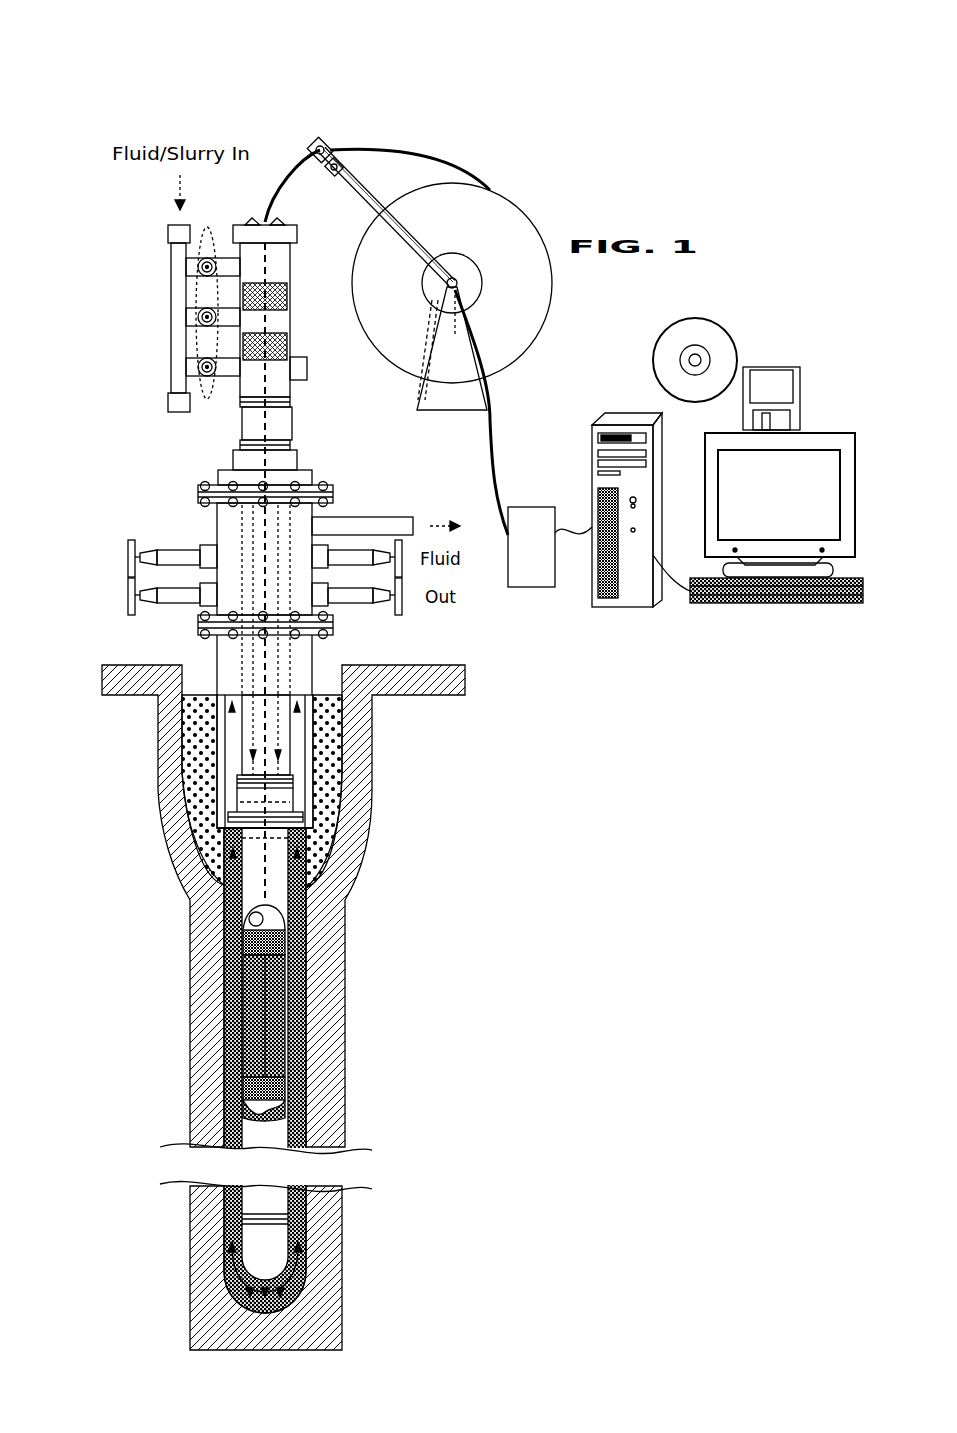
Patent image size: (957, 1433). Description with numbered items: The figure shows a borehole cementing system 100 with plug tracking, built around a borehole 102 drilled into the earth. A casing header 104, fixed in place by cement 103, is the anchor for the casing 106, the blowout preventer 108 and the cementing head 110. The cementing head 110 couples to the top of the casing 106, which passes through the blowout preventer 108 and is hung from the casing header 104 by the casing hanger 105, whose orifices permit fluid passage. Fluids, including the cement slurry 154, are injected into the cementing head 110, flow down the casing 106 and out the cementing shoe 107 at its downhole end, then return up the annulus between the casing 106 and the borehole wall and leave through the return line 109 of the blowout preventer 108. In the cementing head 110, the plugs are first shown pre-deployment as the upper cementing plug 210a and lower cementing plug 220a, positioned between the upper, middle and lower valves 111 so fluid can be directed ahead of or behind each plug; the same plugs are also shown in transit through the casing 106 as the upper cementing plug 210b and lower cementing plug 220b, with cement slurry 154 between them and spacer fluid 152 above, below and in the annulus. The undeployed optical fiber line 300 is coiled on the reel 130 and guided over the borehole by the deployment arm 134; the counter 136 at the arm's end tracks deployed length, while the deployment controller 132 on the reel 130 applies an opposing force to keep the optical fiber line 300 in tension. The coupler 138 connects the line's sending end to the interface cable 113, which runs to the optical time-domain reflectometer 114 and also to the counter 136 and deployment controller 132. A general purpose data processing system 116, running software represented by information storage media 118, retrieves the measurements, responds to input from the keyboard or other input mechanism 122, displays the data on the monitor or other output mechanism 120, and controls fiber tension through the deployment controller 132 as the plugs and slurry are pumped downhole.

The borehole cementing system 100 is at (285, 87).
The borehole 102 is at (353, 762).
The cement 103 is at (200, 788).
The casing header 104 is at (217, 762).
The casing hanger 105 is at (303, 828).
The casing 106 is at (242, 960).
The cementing shoe 107 is at (297, 1233).
The blowout preventer 108 is at (103, 495).
The return line 109 is at (395, 517).
The cementing head 110 is at (133, 412).
The valves 111 is at (215, 402).
The interface cable 113 is at (497, 488).
The optical time-domain reflectometer 114 is at (537, 587).
The general purpose data processing system 116 is at (661, 538).
The information storage media 118 is at (753, 367).
The monitor or other output mechanism 120 is at (787, 508).
The keyboard or other input mechanism 122 is at (779, 605).
The reel 130 is at (473, 222).
The deployment controller 132 is at (478, 287).
The deployment arm 134 is at (400, 245).
The counter 136 is at (348, 165).
The coupler 138 is at (452, 348).
The spacer fluid 152 is at (297, 1093).
The cement slurry 154 is at (253, 993).
The upper cementing plug 210a is at (276, 288).
The lower cementing plug 220a is at (276, 340).
The upper cementing plug 210b is at (237, 923).
The lower cementing plug 220b is at (243, 1073).
The optical fiber line 300 is at (352, 158).